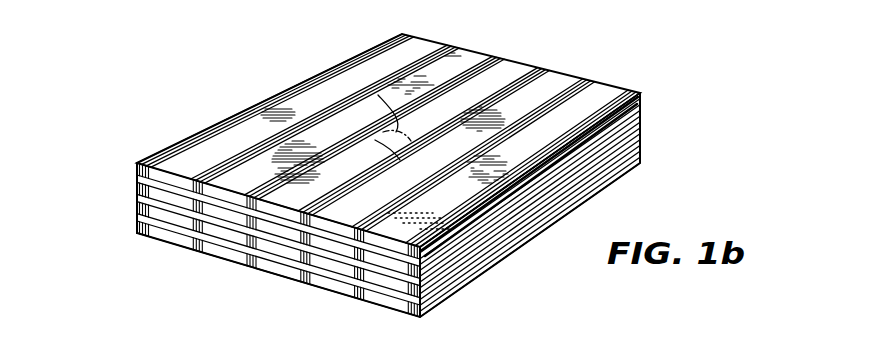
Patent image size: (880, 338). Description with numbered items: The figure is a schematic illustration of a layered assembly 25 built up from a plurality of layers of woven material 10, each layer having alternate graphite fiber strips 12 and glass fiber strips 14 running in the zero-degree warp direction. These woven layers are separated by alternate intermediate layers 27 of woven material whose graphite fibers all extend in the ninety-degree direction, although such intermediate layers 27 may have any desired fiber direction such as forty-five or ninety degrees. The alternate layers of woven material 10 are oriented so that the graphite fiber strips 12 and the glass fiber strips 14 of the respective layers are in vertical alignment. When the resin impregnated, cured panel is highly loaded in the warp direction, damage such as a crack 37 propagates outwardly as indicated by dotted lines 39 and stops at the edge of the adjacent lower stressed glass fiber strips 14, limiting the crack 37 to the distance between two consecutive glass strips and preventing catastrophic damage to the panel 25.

The woven material 10 is at (610, 99).
The graphite fiber strips 12 is at (417, 48).
The glass fiber strips 14 is at (490, 62).
The layered assembly 25 is at (583, 49).
The intermediate layers 27 is at (137, 177).
The crack 37 is at (378, 95).
The dotted lines 39 is at (383, 132).